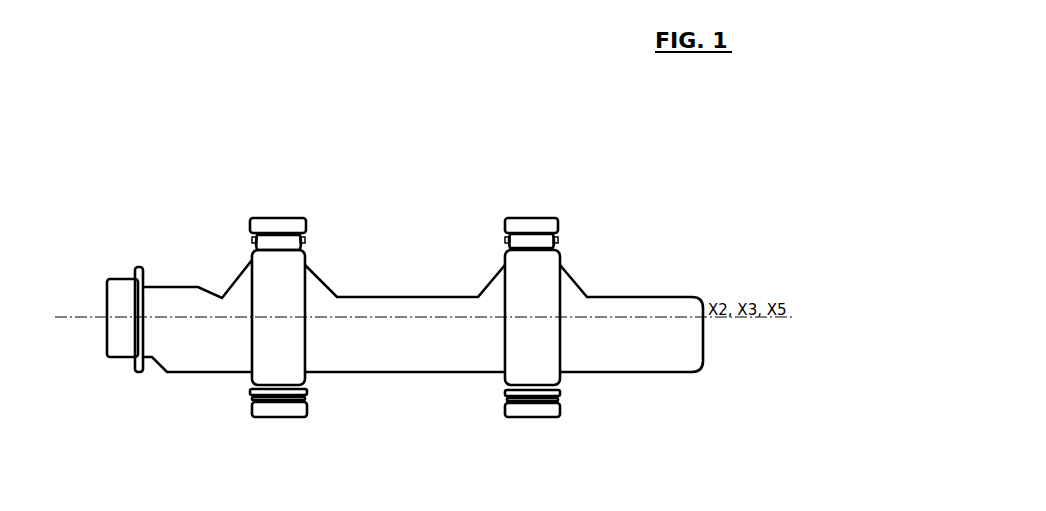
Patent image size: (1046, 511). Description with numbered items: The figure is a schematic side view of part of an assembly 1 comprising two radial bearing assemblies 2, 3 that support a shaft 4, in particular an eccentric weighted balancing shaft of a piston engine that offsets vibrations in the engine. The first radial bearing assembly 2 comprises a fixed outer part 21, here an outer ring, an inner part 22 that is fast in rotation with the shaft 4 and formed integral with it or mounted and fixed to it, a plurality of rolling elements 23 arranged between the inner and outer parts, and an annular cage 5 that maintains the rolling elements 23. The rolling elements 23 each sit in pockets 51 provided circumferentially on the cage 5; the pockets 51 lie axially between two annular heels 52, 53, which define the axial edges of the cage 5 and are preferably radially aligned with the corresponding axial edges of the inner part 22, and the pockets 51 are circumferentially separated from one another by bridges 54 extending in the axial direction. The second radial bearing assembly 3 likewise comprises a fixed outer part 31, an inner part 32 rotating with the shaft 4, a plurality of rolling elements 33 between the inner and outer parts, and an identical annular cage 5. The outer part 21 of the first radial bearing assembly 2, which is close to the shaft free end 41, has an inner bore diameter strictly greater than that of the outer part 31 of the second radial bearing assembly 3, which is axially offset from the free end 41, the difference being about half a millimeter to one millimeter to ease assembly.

The assembly 1 is at (430, 302).
The first radial bearing assembly 2 is at (526, 320).
The fixed outer part 21 is at (545, 227).
The inner part 22 is at (565, 357).
The rolling elements 23 is at (513, 444).
The second radial bearing assembly 3 is at (270, 320).
The fixed outer part 31 is at (290, 222).
The inner part 32 is at (310, 380).
The rolling elements 33 is at (290, 405).
The shaft 4 is at (448, 317).
The shaft free end 41 is at (700, 350).
The annular cage 5 is at (403, 194).
The pockets 51 is at (528, 240).
The annular heel 52 is at (560, 238).
The annular heel 53 is at (505, 237).
The bridges 54 is at (508, 417).